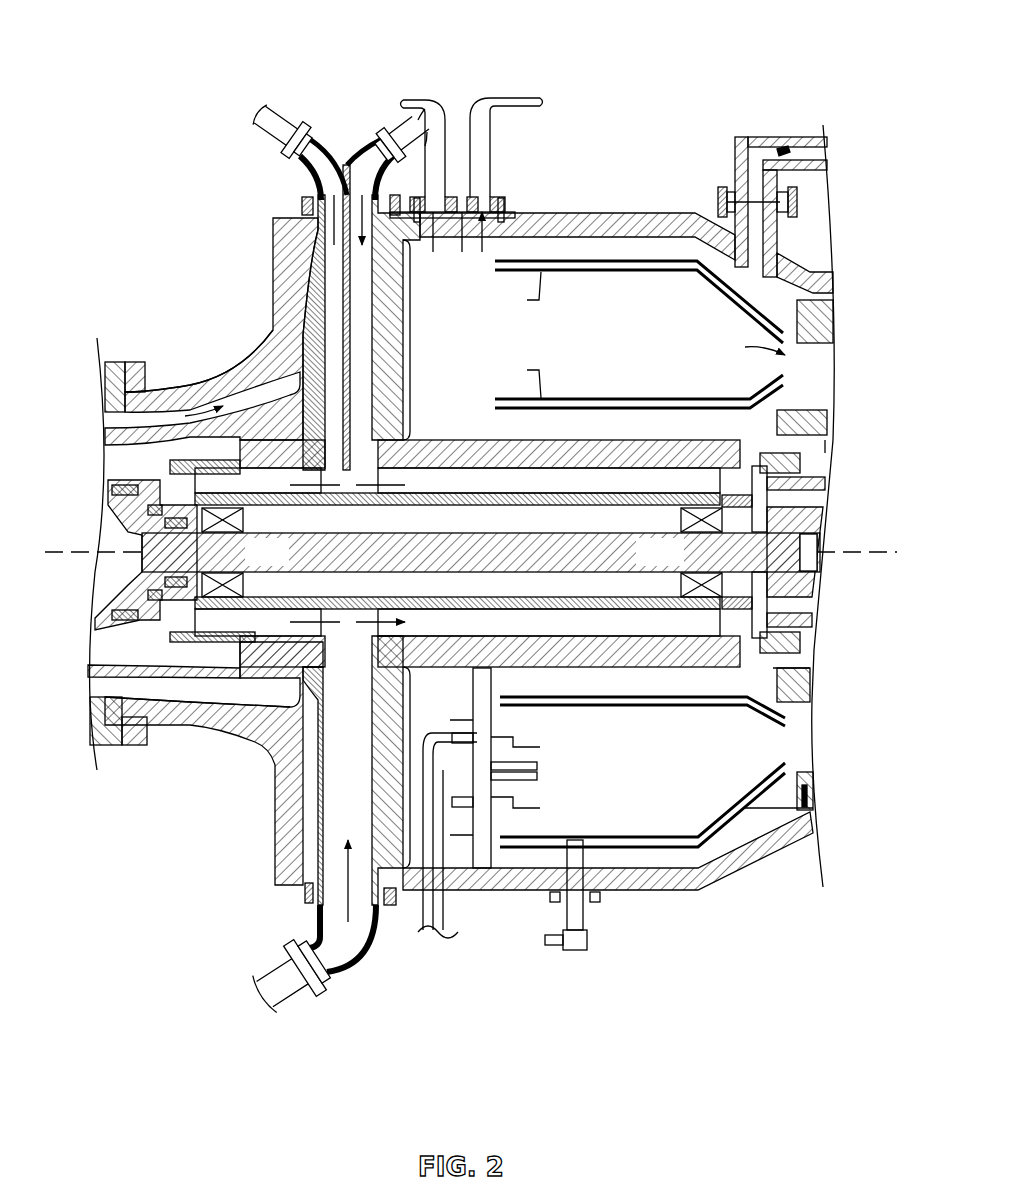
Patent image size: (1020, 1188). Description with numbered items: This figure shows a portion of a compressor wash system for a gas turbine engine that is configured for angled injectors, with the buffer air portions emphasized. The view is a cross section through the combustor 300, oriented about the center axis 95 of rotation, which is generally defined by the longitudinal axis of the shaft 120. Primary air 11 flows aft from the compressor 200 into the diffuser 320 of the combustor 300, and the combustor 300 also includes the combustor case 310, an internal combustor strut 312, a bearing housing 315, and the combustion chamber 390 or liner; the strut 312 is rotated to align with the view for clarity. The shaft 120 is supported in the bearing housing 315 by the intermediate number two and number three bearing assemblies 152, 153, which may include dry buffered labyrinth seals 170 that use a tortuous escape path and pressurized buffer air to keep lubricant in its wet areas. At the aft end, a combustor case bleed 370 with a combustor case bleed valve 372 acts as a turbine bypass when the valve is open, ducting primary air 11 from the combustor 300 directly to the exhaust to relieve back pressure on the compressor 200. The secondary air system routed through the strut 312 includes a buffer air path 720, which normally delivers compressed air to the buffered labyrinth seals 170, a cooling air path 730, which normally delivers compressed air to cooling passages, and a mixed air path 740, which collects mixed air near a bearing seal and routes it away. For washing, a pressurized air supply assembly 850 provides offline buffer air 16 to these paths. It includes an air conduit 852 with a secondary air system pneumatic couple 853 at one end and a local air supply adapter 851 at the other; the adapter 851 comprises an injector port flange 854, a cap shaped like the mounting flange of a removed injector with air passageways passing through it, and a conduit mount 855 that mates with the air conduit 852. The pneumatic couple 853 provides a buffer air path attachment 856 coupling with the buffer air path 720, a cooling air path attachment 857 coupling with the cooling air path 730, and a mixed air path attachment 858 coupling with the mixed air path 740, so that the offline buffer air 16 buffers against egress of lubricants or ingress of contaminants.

The primary air 11 is at (200, 413).
The offline buffer air 16 is at (328, 205).
The center axis 95 is at (78, 550).
The shaft 120 is at (537, 572).
The number two bearing assembly 152 is at (225, 530).
The number three bearing assembly 153 is at (708, 573).
The buffered labyrinth seals 170 is at (133, 597).
The compressor 200 is at (118, 345).
The combustor 300 is at (660, 105).
The combustor case 310 is at (612, 213).
The internal combustor strut 312 is at (405, 370).
The bearing housing 315 is at (610, 503).
The diffuser 320 is at (287, 367).
The combustor case bleed 370 is at (783, 130).
The combustor case bleed valve 372 is at (780, 150).
The combustion chamber 390 is at (605, 265).
The buffer air path 720 is at (280, 820).
The cooling air path 730 is at (333, 325).
The mixed air path 740 is at (357, 312).
The pressurized air supply assembly 850 is at (500, 52).
The local air supply adapter 851 is at (530, 142).
The air conduit 852 is at (478, 118).
The secondary air system pneumatic couple 853 is at (318, 125).
The injector port flange 854 is at (508, 210).
The conduit mount 855 is at (492, 198).
The buffer air path attachment 856 is at (300, 998).
The cooling air path attachment 857 is at (388, 118).
The mixed air path attachment 858 is at (282, 122).